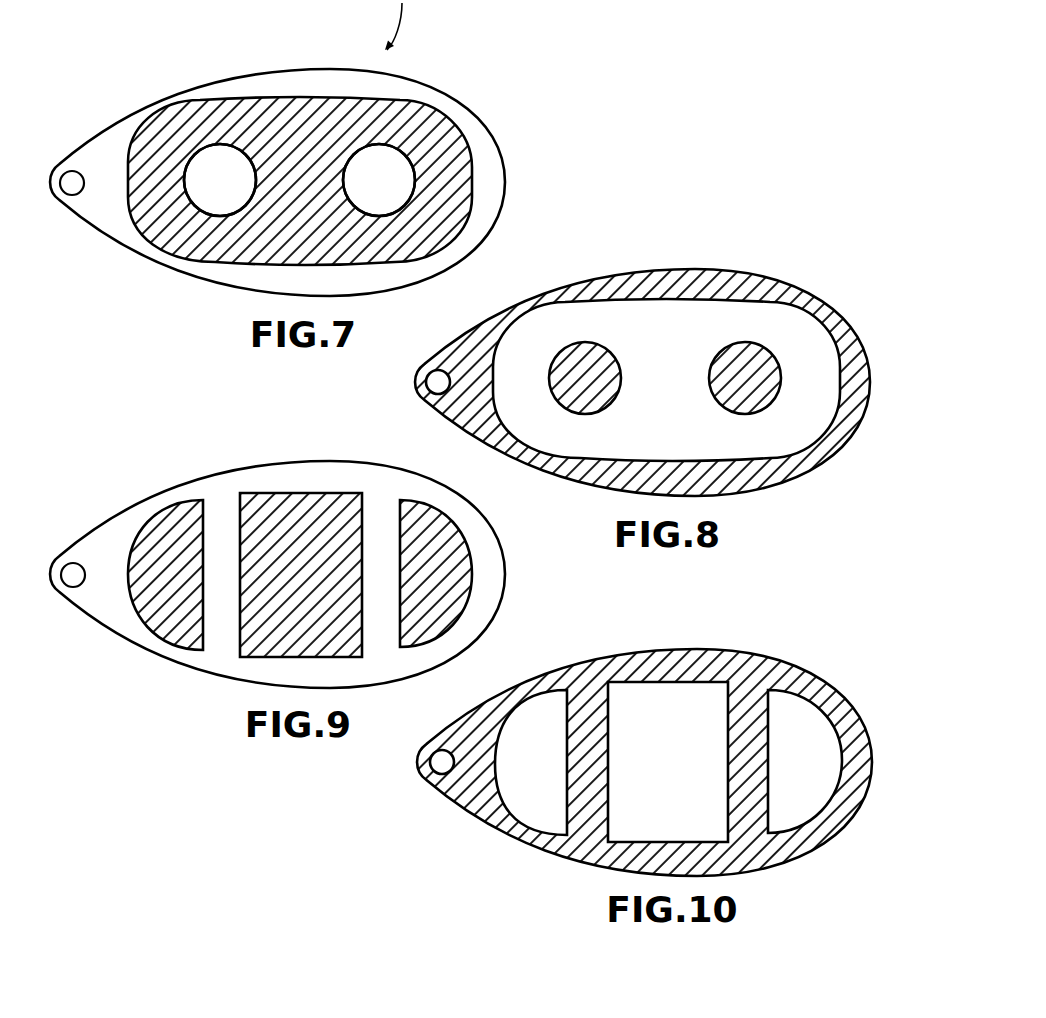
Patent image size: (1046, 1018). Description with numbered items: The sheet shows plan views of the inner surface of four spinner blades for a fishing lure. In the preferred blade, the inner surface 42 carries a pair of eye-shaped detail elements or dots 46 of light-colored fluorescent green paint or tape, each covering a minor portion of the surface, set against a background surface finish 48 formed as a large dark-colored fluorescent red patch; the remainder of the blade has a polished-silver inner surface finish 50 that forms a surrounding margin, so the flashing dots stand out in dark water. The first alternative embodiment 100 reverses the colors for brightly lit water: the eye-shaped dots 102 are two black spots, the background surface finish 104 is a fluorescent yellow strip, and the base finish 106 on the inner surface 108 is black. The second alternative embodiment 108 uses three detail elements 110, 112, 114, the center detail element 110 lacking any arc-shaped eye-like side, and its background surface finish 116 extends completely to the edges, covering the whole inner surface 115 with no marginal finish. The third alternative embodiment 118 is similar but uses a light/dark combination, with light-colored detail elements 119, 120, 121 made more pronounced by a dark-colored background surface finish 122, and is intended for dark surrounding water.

In FIG. 7, the inner surface 42 is at (277, 155).
In FIG. 7, the eye-shaped detail elements or dots 46 is at (299, 180).
In FIG. 7, the background surface finish 48 is at (300, 145).
In FIG. 7, the inner surface finish 50 is at (277, 155).
In FIG. 8, the first alternative embodiment of spinner blade 100 is at (642, 340).
In FIG. 8, the eye-shaped detail elements or dots 102 is at (665, 386).
In FIG. 8, the background surface finish 104 is at (663, 333).
In FIG. 8, the base finish 106 is at (642, 363).
In FIG. 8, the inner surface 108 is at (642, 348).
In FIG. 9, the inner surface 108 is at (277, 561).
In FIG. 9, the center detail element 110 is at (301, 538).
In FIG. 9, the detail element 112 is at (166, 542).
In FIG. 9, the detail element 114 is at (432, 536).
In FIG. 9, the inner surface 115 is at (277, 593).
In FIG. 9, the background surface finish 116 is at (277, 593).
In FIG. 10, the third alternative embodiment of spinner blade 118 is at (644, 725).
In FIG. 10, the detail element 119 is at (532, 764).
In FIG. 10, the detail element 120 is at (663, 764).
In FIG. 10, the detail element 121 is at (802, 764).
In FIG. 10, the background surface finish 122 is at (644, 743).